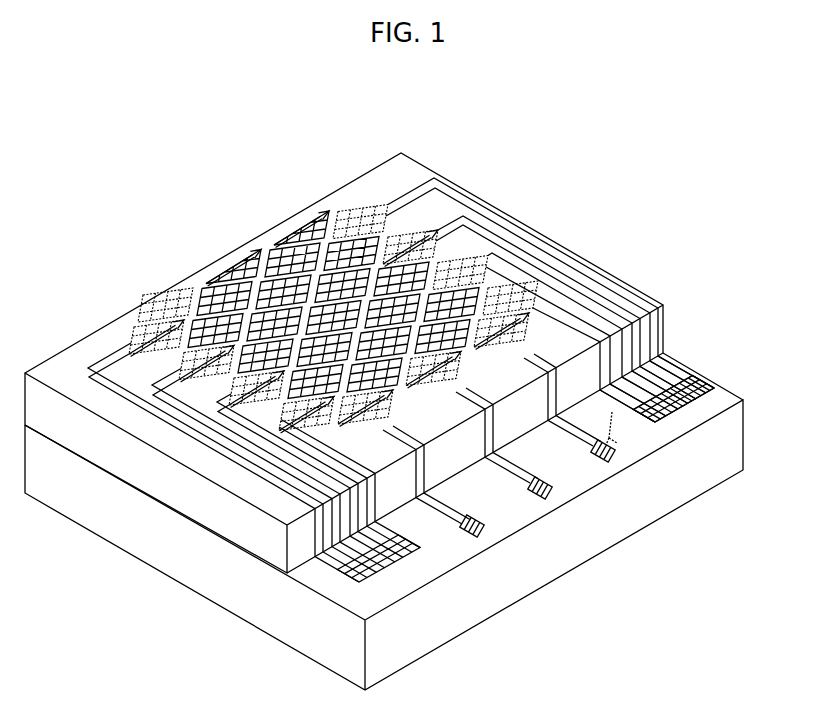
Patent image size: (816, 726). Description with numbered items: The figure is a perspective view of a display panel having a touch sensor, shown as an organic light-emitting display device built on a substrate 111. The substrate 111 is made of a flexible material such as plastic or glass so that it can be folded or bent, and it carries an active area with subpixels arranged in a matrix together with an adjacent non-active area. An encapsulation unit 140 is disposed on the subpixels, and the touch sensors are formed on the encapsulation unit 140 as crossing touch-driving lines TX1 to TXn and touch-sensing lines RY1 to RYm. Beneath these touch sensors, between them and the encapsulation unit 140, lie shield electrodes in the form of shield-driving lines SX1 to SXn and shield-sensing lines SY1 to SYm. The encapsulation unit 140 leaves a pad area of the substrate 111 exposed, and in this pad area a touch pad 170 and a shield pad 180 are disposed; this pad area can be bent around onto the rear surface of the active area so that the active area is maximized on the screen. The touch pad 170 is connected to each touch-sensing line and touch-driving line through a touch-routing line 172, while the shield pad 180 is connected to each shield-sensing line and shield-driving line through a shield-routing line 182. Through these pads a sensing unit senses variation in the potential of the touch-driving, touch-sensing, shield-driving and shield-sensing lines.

The substrate 111 is at (748, 434).
The encapsulation unit 140 is at (666, 329).
The touch pad 170 is at (724, 387).
The touch-routing line 172 is at (660, 357).
The shield pad 180 is at (655, 420).
The shield-routing line 182 is at (627, 415).
The touch-driving line TX1 is at (345, 212).
The shield-driving line SX1 is at (372, 205).
The touch-driving line TXn is at (548, 268).
The shield-driving line SXn is at (584, 266).
The touch-sensing line RY1 is at (166, 308).
The shield-sensing line SY1 is at (170, 297).
The touch-sensing line RYm is at (398, 414).
The shield-sensing line SYm is at (350, 432).